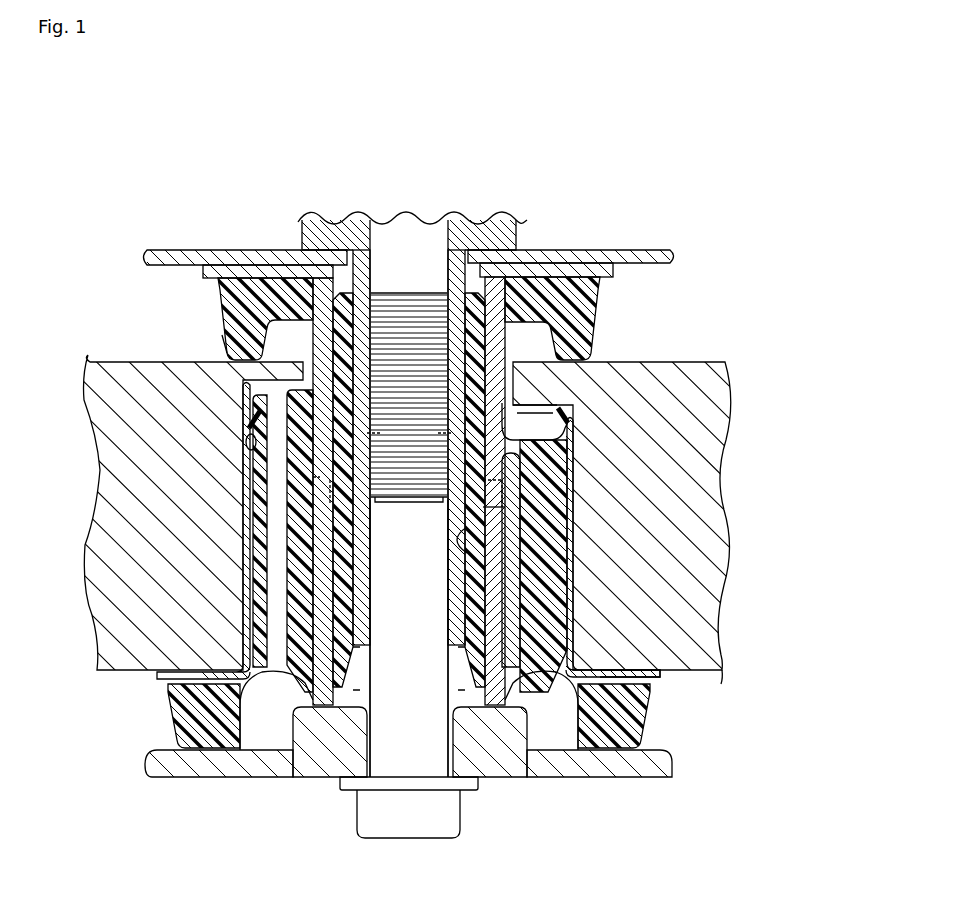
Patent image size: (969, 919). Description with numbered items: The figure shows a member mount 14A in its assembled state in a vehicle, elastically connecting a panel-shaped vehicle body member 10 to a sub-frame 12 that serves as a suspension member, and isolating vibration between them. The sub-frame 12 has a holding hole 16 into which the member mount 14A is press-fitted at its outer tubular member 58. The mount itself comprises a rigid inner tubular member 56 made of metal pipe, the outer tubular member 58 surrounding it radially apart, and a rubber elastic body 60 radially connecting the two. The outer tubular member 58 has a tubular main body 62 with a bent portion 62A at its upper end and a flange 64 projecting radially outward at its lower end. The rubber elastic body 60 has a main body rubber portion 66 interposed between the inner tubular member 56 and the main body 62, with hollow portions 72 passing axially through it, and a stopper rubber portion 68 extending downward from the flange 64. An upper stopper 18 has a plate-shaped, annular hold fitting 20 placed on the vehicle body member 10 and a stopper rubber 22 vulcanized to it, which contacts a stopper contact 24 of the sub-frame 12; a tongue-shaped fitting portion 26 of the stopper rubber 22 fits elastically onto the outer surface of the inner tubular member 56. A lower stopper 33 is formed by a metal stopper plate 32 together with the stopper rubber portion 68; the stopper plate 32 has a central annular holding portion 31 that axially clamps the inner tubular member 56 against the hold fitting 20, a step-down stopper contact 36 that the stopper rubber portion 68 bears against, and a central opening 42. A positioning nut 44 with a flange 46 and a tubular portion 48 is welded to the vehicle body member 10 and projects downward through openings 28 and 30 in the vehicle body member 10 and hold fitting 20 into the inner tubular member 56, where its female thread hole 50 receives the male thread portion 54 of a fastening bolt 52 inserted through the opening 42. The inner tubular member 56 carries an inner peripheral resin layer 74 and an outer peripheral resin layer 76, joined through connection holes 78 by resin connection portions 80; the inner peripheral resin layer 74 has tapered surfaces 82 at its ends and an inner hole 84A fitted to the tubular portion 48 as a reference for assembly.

The vehicle body member 10 is at (635, 244).
The sub-frame 12 is at (700, 397).
The member mount 14A is at (535, 395).
The holding hole 16 is at (180, 530).
The upper stopper 18 is at (198, 319).
The hold fitting 20 is at (228, 270).
The stopper rubber 22 is at (197, 283).
The stopper contact 24 is at (228, 342).
The fitting portion 26 is at (307, 313).
The opening 28 is at (465, 265).
The opening 30 is at (470, 250).
The holding portion 31 is at (347, 717).
The stopper plate 32 is at (676, 751).
The lower stopper 33 is at (148, 709).
The stopper contact 36 is at (223, 757).
The opening 42 is at (374, 737).
The positioning nut 44 is at (470, 218).
The flange 46 is at (312, 218).
The tubular portion 48 is at (470, 320).
The female thread hole 50 is at (407, 465).
The fastening bolt 52 is at (428, 745).
The male thread portion 54 is at (411, 480).
The inner tubular member 56 is at (304, 598).
The outer tubular member 58 is at (632, 540).
The rubber elastic body 60 is at (547, 690).
The main body 62 is at (206, 530).
The bent portion 62A is at (250, 408).
The flange 64 is at (650, 668).
The main body rubber portion 66 is at (540, 530).
The stopper rubber portion 68 is at (195, 738).
The hollow portion 72 is at (268, 560).
The inner peripheral resin layer 74 is at (345, 553).
The outer peripheral resin layer 76 is at (510, 592).
The connection hole 78 is at (330, 488).
The resin connection portion 80 is at (300, 497).
The tapered surface 82 is at (356, 310).
The inner hole 84A is at (465, 553).